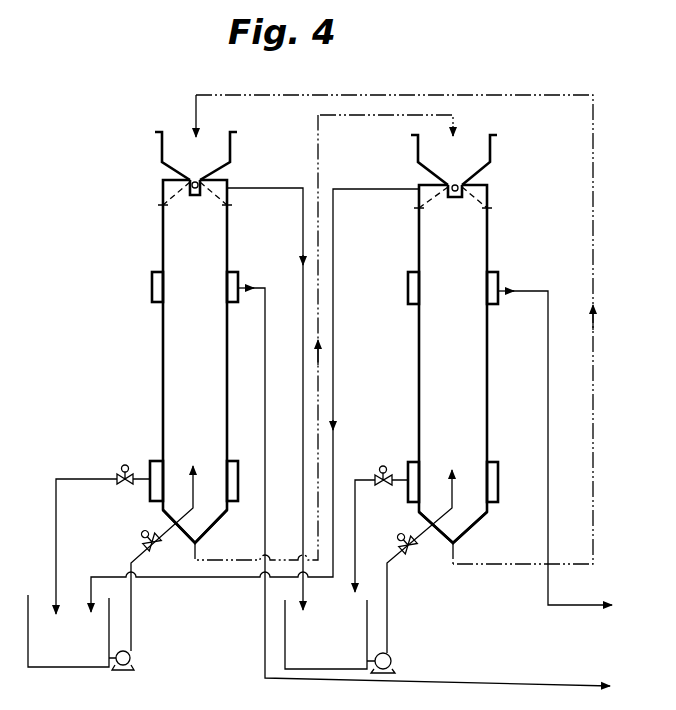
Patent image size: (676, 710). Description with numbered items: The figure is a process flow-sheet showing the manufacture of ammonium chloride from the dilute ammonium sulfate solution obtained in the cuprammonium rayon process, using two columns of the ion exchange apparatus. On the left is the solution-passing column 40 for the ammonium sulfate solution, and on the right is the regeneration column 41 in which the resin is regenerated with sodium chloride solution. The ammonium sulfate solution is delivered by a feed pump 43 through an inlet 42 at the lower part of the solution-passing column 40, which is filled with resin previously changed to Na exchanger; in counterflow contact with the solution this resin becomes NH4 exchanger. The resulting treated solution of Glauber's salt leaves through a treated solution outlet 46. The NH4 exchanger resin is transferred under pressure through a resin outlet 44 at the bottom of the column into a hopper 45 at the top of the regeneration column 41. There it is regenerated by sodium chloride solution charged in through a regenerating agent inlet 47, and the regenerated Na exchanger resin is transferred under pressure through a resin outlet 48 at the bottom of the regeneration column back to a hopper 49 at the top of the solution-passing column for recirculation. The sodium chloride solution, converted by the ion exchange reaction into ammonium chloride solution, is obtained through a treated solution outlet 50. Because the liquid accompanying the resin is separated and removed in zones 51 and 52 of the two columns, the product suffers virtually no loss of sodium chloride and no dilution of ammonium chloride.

The solution-passing column 40 is at (163, 365).
The regeneration column 41 is at (422, 388).
The inlet 42 is at (168, 544).
The feed pump 43 is at (131, 659).
The resin outlet 44 is at (198, 545).
The hopper 45 is at (492, 150).
The treated solution outlet 46 is at (240, 285).
The regenerating agent inlet 47 is at (425, 547).
The resin outlet 48 is at (456, 545).
The hopper 49 is at (232, 150).
The treated solution outlet 50 is at (500, 288).
The zone 51 is at (208, 248).
The zone 52 is at (466, 250).